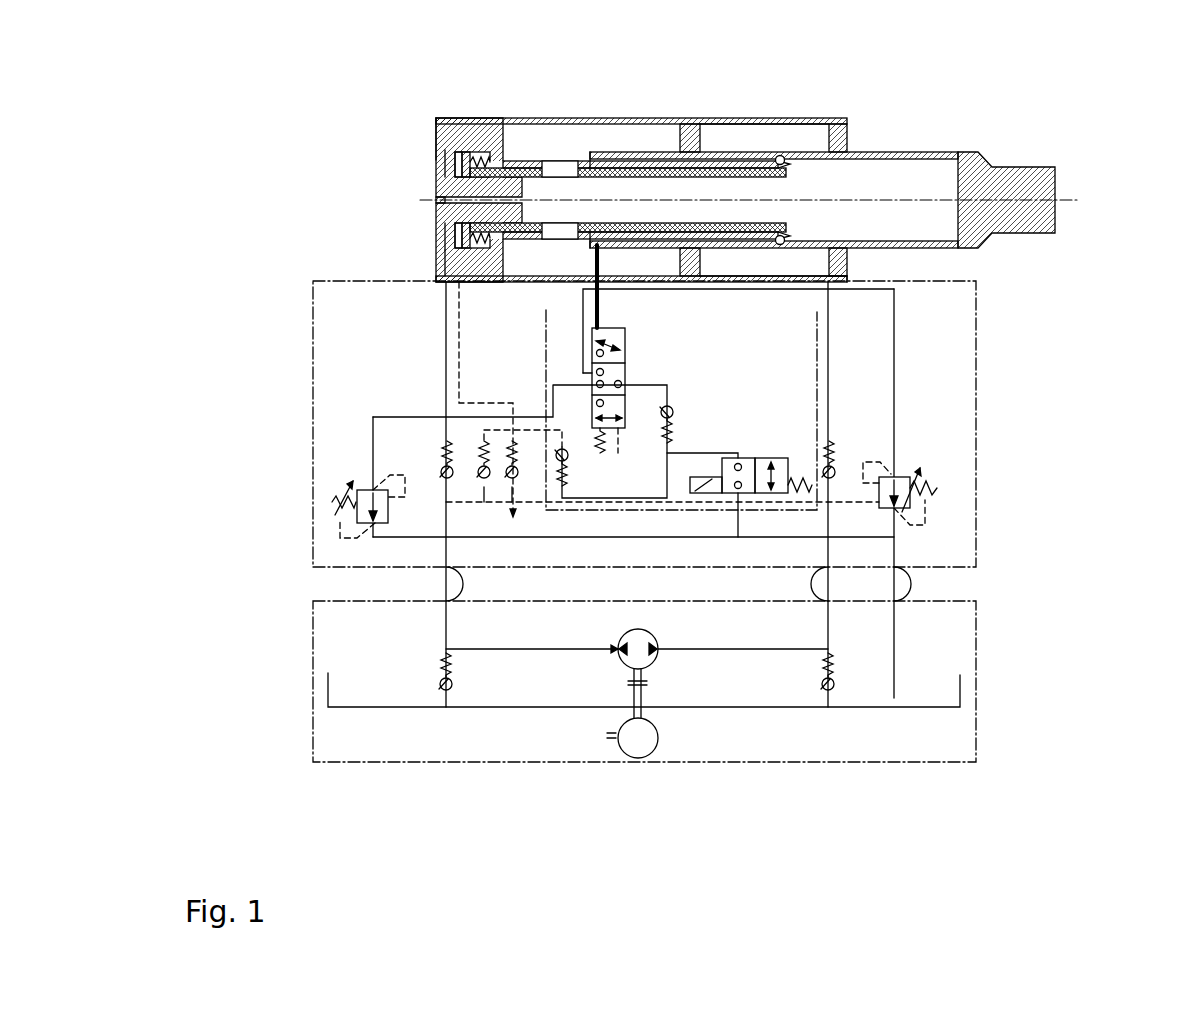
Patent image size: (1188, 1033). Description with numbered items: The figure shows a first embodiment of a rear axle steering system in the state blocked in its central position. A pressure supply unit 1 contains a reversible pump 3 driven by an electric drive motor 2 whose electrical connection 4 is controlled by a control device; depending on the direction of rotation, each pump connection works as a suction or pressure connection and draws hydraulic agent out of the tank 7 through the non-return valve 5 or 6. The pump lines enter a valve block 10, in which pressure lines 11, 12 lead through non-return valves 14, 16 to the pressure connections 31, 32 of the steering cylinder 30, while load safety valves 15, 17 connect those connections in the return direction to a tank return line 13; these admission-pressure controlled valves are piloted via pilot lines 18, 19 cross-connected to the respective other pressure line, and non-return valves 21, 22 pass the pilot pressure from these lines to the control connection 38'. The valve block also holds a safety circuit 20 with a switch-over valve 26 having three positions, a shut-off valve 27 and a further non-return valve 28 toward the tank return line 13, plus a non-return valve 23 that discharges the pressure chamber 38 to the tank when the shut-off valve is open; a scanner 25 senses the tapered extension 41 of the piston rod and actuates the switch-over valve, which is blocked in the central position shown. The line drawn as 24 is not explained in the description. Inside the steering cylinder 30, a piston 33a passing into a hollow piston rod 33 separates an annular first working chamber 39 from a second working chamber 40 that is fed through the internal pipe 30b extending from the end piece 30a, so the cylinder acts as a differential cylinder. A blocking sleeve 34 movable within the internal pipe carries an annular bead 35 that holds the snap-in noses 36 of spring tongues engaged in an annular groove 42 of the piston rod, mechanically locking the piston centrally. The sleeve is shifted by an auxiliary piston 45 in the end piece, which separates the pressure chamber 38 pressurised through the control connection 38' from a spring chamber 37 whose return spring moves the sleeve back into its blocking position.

The pressure supply unit 1 is at (323, 626).
The electric drive motor 2 is at (634, 753).
The reversible pump 3 is at (648, 640).
The electrical connection 4 is at (590, 735).
The non-return valve 5 is at (440, 667).
The non-return valve 6 is at (835, 686).
The tank 7 is at (933, 683).
The valve block 10 is at (947, 322).
The pressure line 11 is at (440, 577).
The pressure line 12 is at (830, 525).
The tank return line 13 is at (894, 566).
The non-return valve 14 is at (440, 468).
The load safety valve 15 is at (370, 506).
The non-return valve 16 is at (836, 470).
The load safety valve 17 is at (896, 482).
The pilot line 18 is at (548, 505).
The pilot line 19 is at (580, 517).
The safety circuit 20 is at (793, 348).
The non-return valve 21 is at (484, 487).
The non-return valve 22 is at (513, 487).
The non-return valve 23 is at (556, 450).
The pilot control line 24 is at (458, 390).
The scanner 25 is at (585, 295).
The switch-over valve 26 is at (589, 381).
The shut-off valve 27 is at (747, 477).
The non-return valve 28 is at (673, 408).
The steering cylinder 30 is at (437, 128).
The end piece 30a is at (440, 132).
The internal pipe 30b is at (626, 156).
The first pressure connection 31 is at (437, 240).
The second pressure connection 32 is at (832, 276).
The piston rod 33 is at (913, 152).
The piston 33a is at (657, 152).
The blocking sleeve 34 is at (683, 126).
The annular bead 35 is at (795, 150).
The snap-in nose 36 is at (835, 127).
The spring chamber 37 is at (488, 160).
The pressure chamber 38 is at (367, 156).
The control connection 38' is at (380, 265).
The first working chamber 39 is at (745, 142).
The second working chamber 40 is at (533, 195).
The extension of piston rod 41 is at (578, 166).
The annular groove 42 is at (786, 155).
The auxiliary piston 45 is at (465, 160).